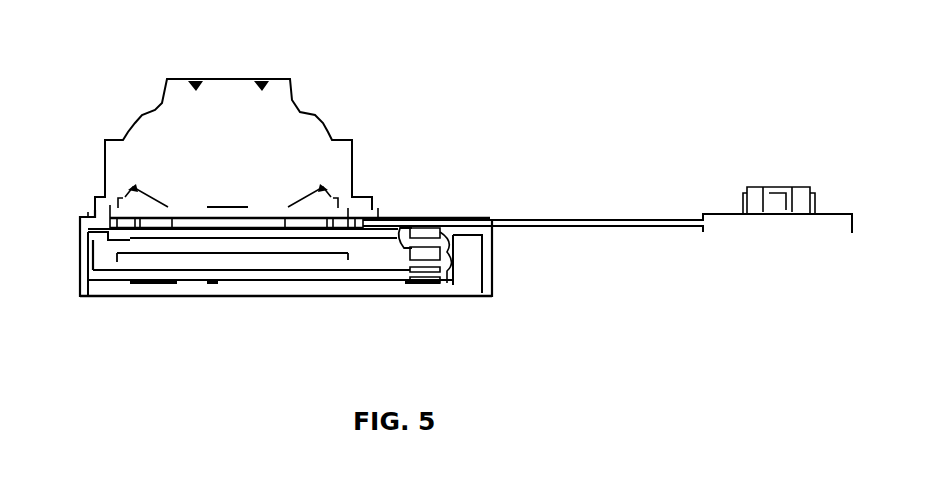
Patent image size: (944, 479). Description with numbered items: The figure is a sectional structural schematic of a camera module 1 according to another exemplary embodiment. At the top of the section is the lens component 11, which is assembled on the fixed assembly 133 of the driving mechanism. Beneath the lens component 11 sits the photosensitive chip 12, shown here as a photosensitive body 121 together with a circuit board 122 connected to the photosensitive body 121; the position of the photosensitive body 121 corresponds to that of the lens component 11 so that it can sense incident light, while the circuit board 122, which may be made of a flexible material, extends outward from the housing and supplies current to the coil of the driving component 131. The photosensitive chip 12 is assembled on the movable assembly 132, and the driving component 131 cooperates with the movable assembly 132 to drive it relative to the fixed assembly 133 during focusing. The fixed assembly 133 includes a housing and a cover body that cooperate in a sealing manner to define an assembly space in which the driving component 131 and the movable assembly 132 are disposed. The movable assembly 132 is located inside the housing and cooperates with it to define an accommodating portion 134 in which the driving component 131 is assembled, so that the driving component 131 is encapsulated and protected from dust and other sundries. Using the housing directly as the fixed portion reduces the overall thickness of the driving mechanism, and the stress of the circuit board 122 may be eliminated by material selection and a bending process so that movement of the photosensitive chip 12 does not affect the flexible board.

The camera module 1 is at (151, 52).
The lens component 11 is at (270, 132).
The photosensitive chip 12 is at (553, 313).
The photosensitive body 121 is at (297, 258).
The circuit board 122 is at (423, 238).
The driving component 131 is at (158, 285).
The movable assembly 132 is at (290, 277).
The fixed assembly 133 is at (247, 285).
The accommodating portion 134 is at (110, 285).